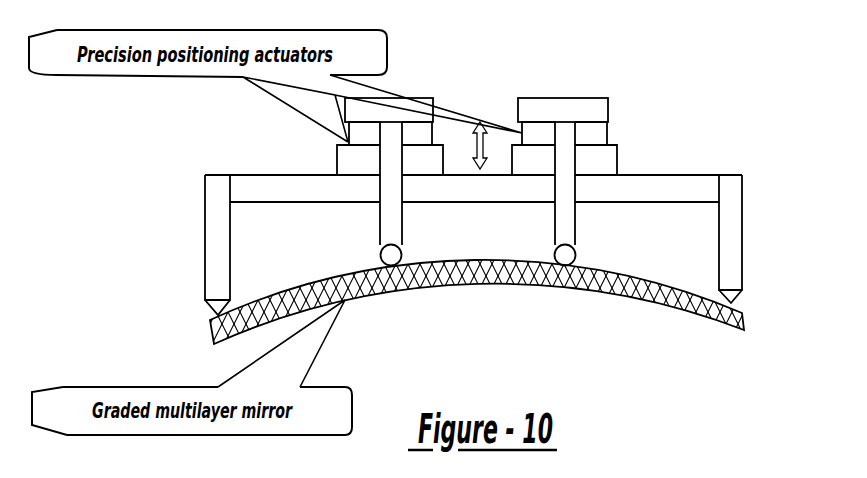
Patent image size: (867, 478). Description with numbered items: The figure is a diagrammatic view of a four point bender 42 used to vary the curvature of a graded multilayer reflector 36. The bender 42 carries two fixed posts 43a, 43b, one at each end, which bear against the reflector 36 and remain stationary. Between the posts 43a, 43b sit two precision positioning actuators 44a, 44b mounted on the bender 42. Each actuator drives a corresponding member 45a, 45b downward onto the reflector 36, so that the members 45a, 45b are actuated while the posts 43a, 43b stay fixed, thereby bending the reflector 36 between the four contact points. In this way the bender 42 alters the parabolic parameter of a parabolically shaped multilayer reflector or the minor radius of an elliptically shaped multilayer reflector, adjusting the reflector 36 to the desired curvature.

The reflector 36 is at (745, 318).
The four point bender 42 is at (724, 132).
The post 43a is at (205, 255).
The post 43b is at (733, 232).
The precision actuator 44a is at (424, 98).
The precision actuator 44b is at (557, 98).
The member 45a is at (380, 228).
The member 45b is at (575, 217).